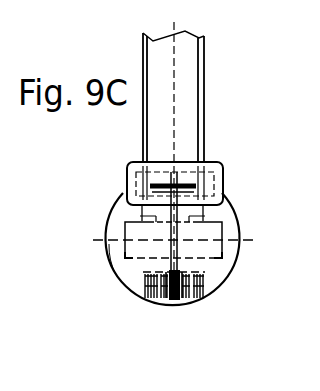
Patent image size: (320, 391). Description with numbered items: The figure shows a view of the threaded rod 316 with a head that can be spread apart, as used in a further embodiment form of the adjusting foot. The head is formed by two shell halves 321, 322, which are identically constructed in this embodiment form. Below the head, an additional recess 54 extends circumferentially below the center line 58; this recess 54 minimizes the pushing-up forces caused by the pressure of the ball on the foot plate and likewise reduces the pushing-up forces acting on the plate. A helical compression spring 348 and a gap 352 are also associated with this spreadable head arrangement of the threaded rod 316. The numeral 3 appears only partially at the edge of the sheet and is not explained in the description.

The brush head assembly 3 is at (246, 156).
The shell half 321 is at (122, 210).
The threaded rod 316 is at (215, 230).
The center line 58 is at (93, 240).
The additional recess 54 is at (108, 263).
The shell half 322 is at (215, 272).
The helical compression spring 348 is at (202, 297).
The gap 352 is at (175, 298).